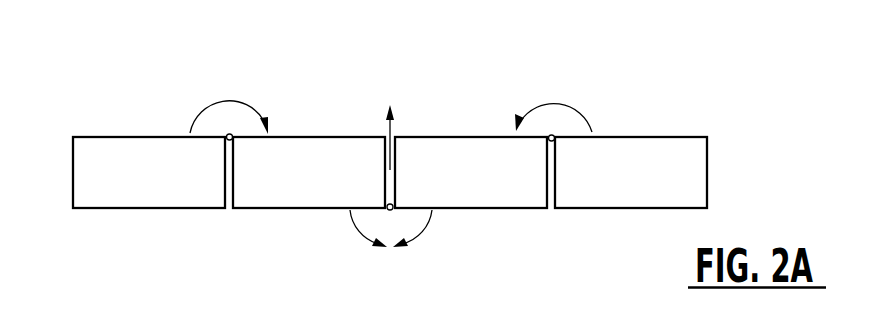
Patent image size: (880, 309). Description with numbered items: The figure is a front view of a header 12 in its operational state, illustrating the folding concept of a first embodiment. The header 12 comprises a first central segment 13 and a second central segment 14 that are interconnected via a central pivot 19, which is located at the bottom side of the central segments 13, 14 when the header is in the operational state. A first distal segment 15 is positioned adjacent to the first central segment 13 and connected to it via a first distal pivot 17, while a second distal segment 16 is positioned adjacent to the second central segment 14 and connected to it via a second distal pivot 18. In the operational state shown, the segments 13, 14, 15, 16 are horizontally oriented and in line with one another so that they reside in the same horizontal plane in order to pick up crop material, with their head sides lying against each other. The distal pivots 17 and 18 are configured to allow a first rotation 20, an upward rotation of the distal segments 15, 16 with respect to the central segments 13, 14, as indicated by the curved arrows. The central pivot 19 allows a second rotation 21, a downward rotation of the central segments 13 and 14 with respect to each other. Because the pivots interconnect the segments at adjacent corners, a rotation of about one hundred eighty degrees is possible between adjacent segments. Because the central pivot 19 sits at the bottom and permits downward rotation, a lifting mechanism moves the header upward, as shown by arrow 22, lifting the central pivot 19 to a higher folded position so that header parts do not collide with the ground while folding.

The header 12 is at (705, 98).
The first central segment 13 is at (316, 186).
The second central segment 14 is at (478, 186).
The first distal segment 15 is at (158, 186).
The second distal segment 16 is at (638, 186).
The first distal pivot 17 is at (231, 140).
The second distal pivot 18 is at (553, 141).
The central pivot 19 is at (386, 204).
The first rotation 20 is at (222, 97).
The second rotation 21 is at (352, 225).
The arrow 22 is at (393, 133).